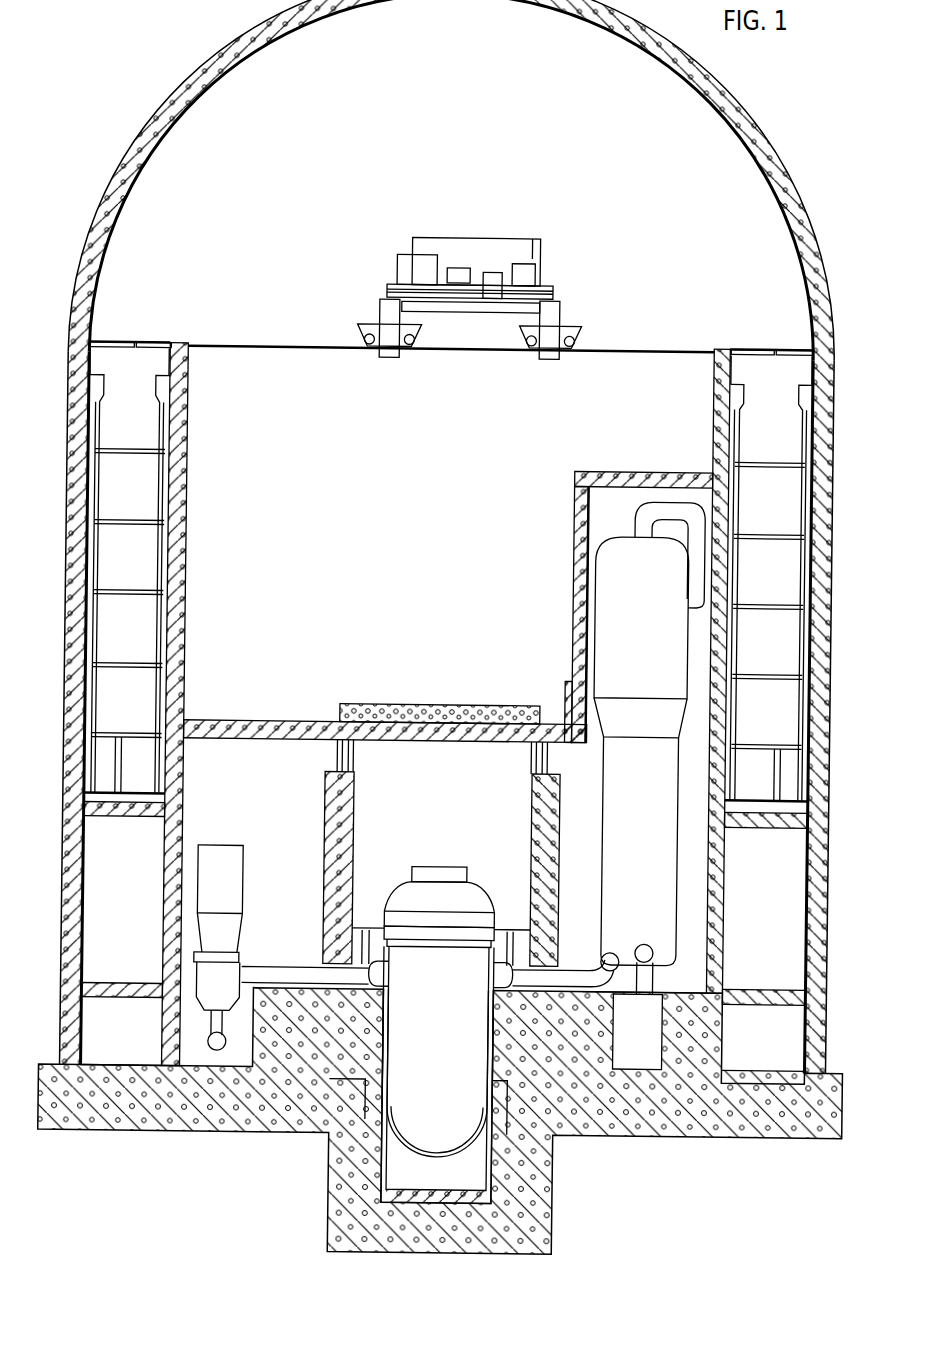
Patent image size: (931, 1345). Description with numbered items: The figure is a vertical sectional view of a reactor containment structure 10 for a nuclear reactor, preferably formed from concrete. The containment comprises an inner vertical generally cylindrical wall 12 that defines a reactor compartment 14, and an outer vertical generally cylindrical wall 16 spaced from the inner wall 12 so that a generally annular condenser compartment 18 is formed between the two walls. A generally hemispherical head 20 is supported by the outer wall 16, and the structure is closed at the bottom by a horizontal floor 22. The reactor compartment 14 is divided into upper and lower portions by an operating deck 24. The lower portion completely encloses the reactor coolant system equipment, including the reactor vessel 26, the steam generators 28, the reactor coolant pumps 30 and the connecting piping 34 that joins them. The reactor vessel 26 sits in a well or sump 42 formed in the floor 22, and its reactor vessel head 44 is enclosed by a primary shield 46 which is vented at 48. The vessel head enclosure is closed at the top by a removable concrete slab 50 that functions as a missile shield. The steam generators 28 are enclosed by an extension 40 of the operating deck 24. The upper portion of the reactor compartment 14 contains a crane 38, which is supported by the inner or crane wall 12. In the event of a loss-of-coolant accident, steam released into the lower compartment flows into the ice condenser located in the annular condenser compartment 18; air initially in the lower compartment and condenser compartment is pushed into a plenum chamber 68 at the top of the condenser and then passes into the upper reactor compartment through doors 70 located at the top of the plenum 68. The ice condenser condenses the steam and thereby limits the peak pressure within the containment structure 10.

The reactor containment structure 10 is at (97, 131).
The inner vertical generally cylindrical wall 12 is at (179, 493).
The reactor compartment 14 is at (421, 577).
The outer vertical generally cylindrical wall 16 is at (66, 469).
The annular condenser compartment 18 is at (145, 565).
The hemispherical head 20 is at (219, 60).
The horizontal floor 22 is at (301, 990).
The operating deck 24 is at (255, 723).
The reactor vessel 26 is at (452, 953).
The steam generators 28 is at (612, 607).
The reactor coolant pumps 30 is at (245, 872).
The connecting piping 34 is at (633, 513).
The crane 38 is at (377, 293).
The extension of the operating deck 40 is at (580, 510).
The well or sump 42 is at (482, 1176).
The reactor vessel head 44 is at (412, 898).
The primary shield 46 is at (355, 824).
The vent 48 is at (354, 761).
The removable concrete slab 50 is at (416, 705).
The plenum chamber 68 is at (135, 405).
The doors 70 is at (153, 346).